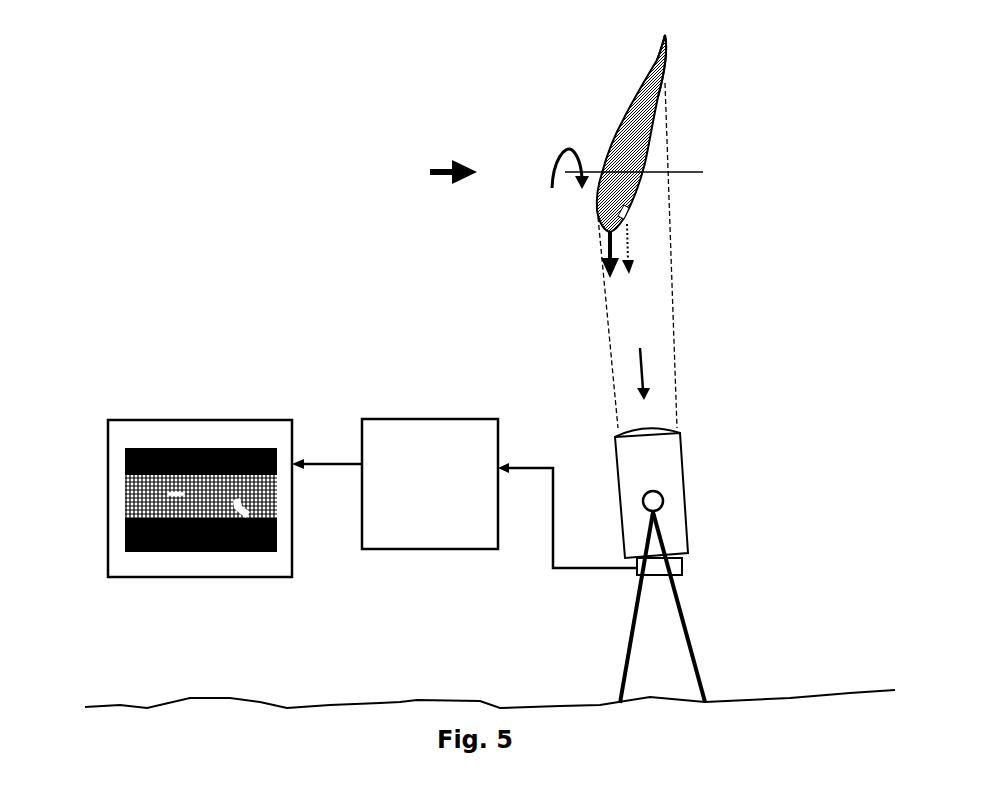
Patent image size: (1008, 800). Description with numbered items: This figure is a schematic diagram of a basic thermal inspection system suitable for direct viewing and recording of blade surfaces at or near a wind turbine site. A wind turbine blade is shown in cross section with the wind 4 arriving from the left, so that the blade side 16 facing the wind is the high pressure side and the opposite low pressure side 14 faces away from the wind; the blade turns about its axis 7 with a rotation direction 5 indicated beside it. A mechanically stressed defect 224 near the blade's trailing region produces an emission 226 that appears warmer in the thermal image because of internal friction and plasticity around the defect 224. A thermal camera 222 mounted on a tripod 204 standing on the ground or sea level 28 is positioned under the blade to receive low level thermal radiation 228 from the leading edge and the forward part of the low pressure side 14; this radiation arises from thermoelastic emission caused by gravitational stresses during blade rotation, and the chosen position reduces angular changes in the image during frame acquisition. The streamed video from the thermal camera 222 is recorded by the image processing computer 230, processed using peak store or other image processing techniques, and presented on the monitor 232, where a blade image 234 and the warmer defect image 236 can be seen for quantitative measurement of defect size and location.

The wind 4 is at (443, 180).
The blade rotation direction arrow 5 is at (603, 247).
The rotor axis 7 is at (680, 172).
The low pressure side 14 is at (660, 110).
The blade side facing the wind 16 is at (654, 109).
The ground or sea level 28 is at (403, 702).
The thermal emissions 204 is at (698, 658).
The thermal camera 222 is at (682, 462).
The defect 224 is at (625, 212).
The emission 226 is at (630, 247).
The thermal radiation 228 is at (647, 370).
The image processing computer 230 is at (415, 433).
The monitor 232 is at (280, 438).
The image of blade 234 is at (150, 502).
The image of defect 236 is at (250, 513).